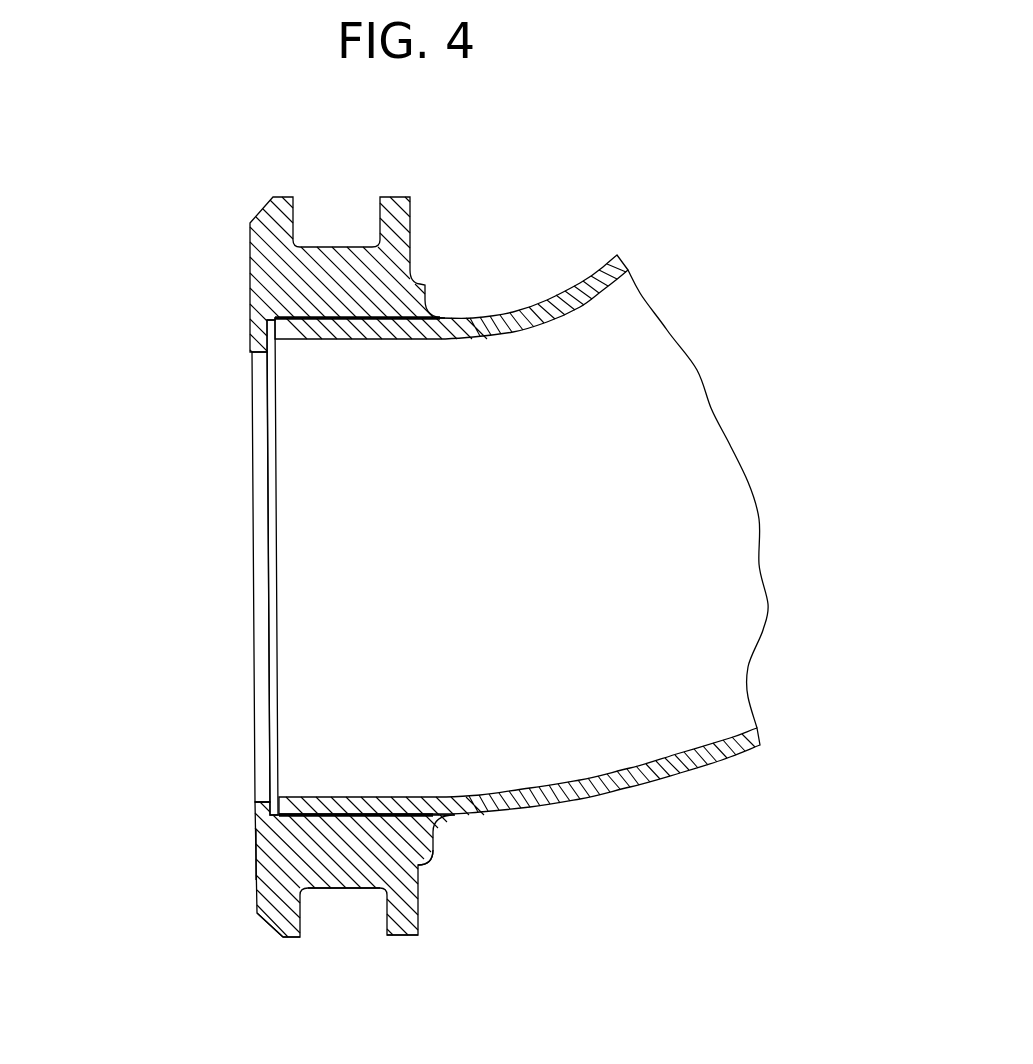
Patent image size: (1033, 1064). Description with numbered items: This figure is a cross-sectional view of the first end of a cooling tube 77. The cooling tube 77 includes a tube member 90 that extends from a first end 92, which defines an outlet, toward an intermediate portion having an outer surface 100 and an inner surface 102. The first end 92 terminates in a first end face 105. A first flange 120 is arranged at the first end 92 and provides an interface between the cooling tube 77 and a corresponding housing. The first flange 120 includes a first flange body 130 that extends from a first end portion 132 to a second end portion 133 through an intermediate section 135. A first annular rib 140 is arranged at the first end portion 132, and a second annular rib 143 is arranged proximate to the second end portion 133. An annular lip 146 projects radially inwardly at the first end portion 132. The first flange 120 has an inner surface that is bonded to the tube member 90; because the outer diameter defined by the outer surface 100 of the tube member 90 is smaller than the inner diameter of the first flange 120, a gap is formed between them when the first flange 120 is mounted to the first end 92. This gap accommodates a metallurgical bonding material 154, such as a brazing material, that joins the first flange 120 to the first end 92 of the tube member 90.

The cooling tube 77 is at (727, 828).
The tube member 90 is at (515, 283).
The first end 92 is at (297, 803).
The outer surface 100 is at (567, 814).
The inner surface 102 is at (493, 337).
The first end face 105 is at (270, 335).
The first flange 120 is at (285, 967).
The first flange body 130 is at (255, 884).
The first end portion 132 is at (256, 852).
The second end portion 133 is at (440, 853).
The intermediate section 135 is at (342, 888).
The first annular rib 140 is at (270, 927).
The second annular rib 143 is at (400, 937).
The annular lip 146 is at (255, 802).
The metallurgical bonding material 154 is at (340, 815).